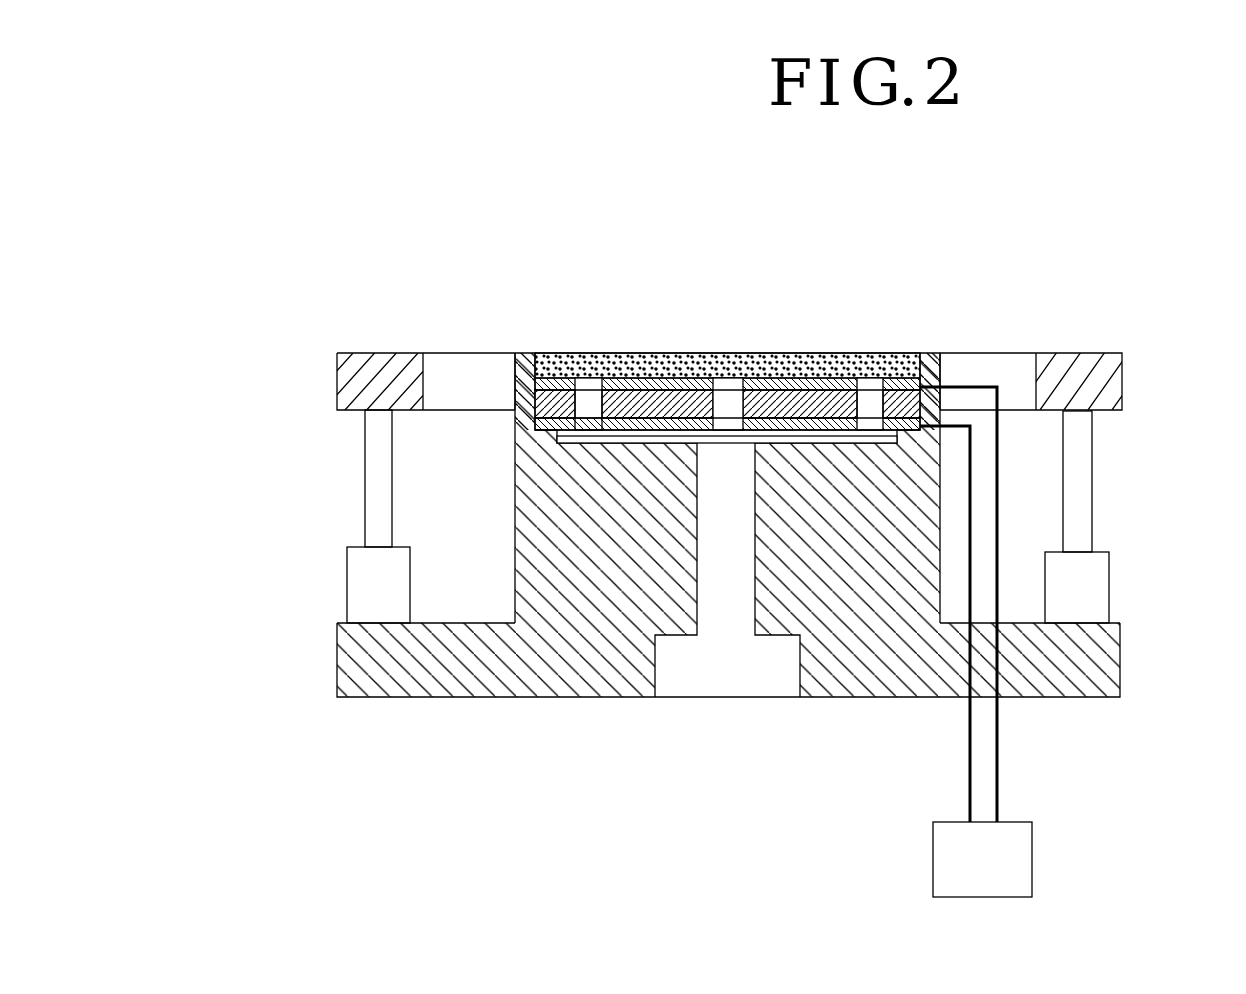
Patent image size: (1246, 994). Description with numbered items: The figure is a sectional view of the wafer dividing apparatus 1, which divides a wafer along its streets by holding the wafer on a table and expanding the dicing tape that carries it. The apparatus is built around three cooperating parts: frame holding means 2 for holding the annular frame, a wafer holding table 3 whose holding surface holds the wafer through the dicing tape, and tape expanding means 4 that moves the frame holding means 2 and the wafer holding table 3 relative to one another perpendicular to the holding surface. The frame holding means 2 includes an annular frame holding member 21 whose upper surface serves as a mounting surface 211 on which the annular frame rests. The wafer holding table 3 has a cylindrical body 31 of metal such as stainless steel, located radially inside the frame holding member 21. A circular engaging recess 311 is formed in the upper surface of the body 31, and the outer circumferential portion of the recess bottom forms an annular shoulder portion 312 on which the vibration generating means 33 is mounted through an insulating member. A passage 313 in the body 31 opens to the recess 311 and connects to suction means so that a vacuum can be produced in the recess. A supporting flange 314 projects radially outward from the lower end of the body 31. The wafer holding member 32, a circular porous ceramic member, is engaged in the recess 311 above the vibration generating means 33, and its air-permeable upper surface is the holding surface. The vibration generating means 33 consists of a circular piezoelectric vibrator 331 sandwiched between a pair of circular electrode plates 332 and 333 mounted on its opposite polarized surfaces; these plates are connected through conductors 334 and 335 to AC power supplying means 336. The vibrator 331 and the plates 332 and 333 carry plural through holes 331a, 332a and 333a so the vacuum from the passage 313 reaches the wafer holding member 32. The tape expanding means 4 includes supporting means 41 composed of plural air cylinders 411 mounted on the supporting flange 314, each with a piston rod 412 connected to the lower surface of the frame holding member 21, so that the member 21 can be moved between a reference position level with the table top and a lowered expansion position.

The wafer dividing apparatus 1 is at (612, 236).
The frame holding means 2 is at (694, 331).
The annular frame holding member 21 is at (376, 358).
The mounting surface 211 is at (1080, 353).
The wafer holding table 3 is at (732, 313).
The cylindrical body 31 is at (663, 535).
The circular engaging recess 311 is at (552, 353).
The annular shoulder portion 312 is at (557, 438).
The passage 313 is at (725, 603).
The supporting flange 314 is at (343, 663).
The wafer holding member 32 is at (650, 365).
The vibration generating means 33 is at (732, 327).
The circular vibrator 331 is at (727, 336).
The through holes 331a is at (730, 400).
The electrode plate 332 is at (718, 331).
The through holes 332a is at (559, 331).
The electrode plate 333 is at (741, 327).
The through holes 333a is at (878, 385).
The conductor 334 is at (1000, 737).
The conductor 335 is at (968, 755).
The AC power supplying means 336 is at (1015, 858).
The tape expanding means 4 is at (699, 527).
The supporting means 41 is at (715, 527).
The air cylinders 411 is at (360, 563).
The piston rod 412 is at (378, 455).